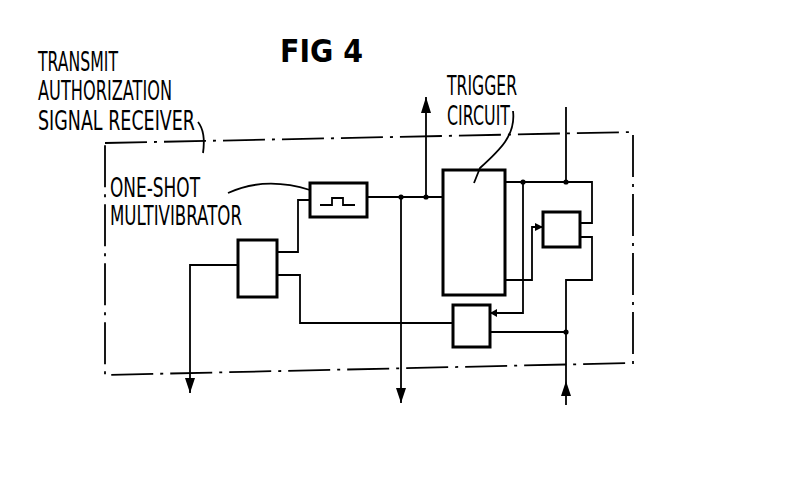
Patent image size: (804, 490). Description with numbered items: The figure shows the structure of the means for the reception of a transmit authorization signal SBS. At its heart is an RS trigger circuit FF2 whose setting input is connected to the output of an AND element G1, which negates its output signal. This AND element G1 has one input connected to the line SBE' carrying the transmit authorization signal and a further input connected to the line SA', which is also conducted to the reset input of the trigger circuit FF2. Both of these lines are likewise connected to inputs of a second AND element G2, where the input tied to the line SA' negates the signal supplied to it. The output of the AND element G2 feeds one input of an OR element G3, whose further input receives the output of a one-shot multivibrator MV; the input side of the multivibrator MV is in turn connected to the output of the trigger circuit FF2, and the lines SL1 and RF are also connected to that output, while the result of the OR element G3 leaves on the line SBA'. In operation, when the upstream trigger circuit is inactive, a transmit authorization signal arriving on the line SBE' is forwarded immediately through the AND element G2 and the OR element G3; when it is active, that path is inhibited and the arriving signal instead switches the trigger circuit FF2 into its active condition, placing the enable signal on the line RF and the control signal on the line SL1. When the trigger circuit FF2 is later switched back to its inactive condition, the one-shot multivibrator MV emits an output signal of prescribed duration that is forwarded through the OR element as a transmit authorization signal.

The means for the reception of a transmit authorization signal SBS is at (634, 292).
The one-shot multivibrator MV is at (343, 217).
The RS trigger circuit FF2 is at (474, 232).
The AND element G1 is at (553, 196).
The AND element G2 is at (453, 338).
The OR element G3 is at (258, 297).
The line RF is at (428, 132).
The line SA' is at (561, 131).
The line SBA' is at (210, 346).
The line SL1 is at (406, 318).
The line SBE' is at (572, 385).